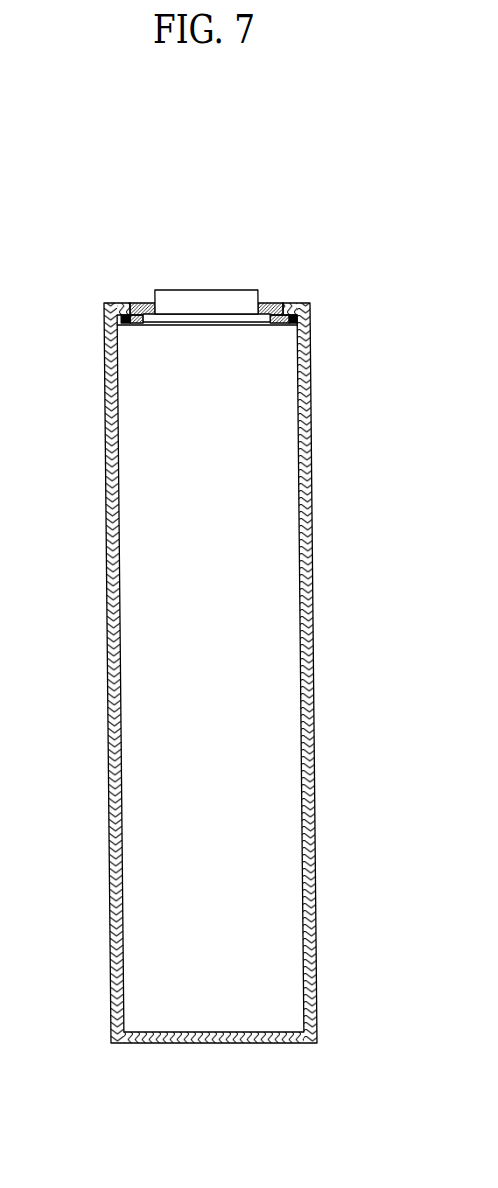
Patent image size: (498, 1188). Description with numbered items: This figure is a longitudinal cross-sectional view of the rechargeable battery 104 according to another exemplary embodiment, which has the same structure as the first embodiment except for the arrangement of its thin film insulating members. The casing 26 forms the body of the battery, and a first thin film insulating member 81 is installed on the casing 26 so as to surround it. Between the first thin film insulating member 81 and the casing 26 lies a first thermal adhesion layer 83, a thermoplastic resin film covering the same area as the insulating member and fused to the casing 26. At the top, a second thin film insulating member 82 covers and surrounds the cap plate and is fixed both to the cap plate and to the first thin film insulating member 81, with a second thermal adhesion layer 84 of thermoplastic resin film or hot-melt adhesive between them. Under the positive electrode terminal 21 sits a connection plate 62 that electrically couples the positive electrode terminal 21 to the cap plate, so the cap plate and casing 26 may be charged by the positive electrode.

The rechargeable battery 104 is at (223, 184).
The casing 26 is at (236, 673).
The first thin film insulating member 81 is at (311, 518).
The first thermal adhesion layer 83 is at (304, 573).
The second thin film insulating member 82 is at (136, 303).
The second thermal adhesion layer 84 is at (125, 319).
The connection plate 62 is at (188, 318).
The positive electrode terminal 21 is at (220, 302).